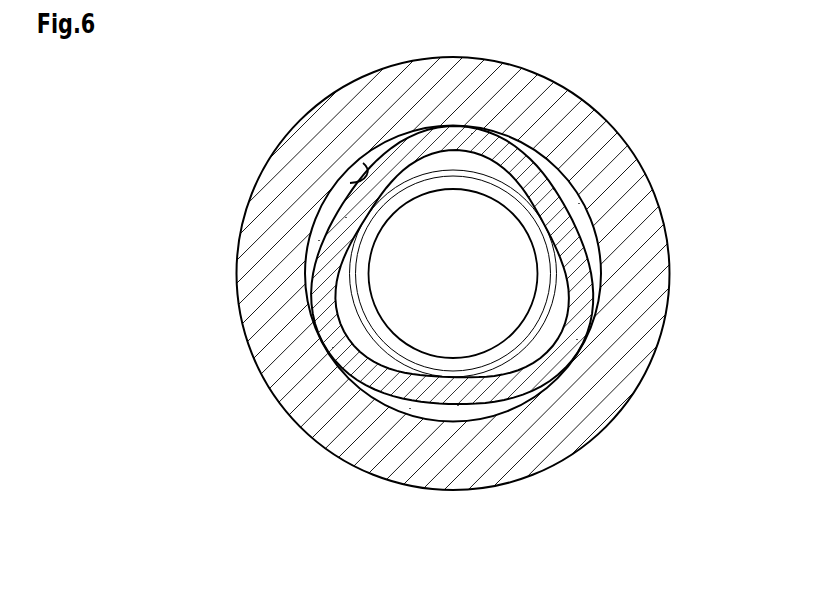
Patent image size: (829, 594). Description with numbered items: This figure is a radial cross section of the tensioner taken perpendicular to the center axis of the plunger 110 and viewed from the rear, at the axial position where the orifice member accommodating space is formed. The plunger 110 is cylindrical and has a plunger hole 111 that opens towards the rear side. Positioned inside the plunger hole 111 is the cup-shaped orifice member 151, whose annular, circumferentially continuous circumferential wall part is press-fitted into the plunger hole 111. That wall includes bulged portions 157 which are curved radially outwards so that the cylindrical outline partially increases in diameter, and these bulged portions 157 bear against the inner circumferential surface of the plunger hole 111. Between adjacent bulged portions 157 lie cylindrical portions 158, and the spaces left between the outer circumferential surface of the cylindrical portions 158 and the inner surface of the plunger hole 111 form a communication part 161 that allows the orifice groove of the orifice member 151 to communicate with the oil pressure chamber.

The plunger 110 is at (578, 437).
The plunger hole 111 is at (350, 182).
The orifice member 151 is at (583, 232).
The bulged portions 157 is at (472, 133).
The cylindrical portions 158 is at (346, 217).
The communication part 161 is at (319, 240).